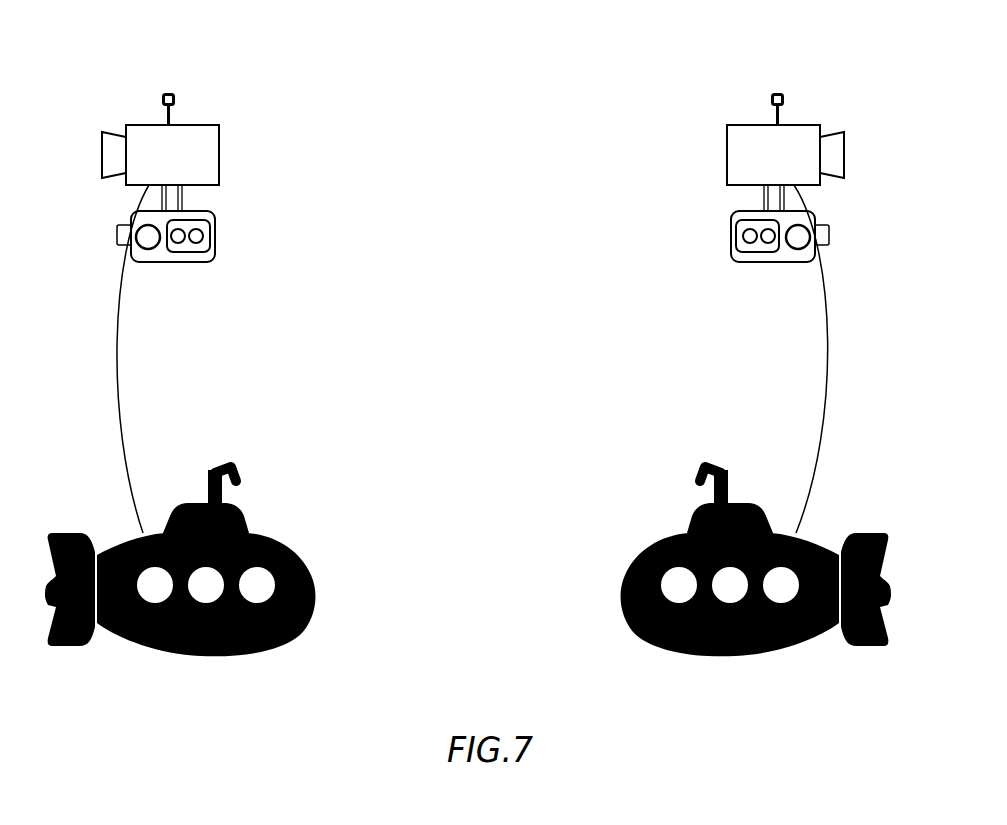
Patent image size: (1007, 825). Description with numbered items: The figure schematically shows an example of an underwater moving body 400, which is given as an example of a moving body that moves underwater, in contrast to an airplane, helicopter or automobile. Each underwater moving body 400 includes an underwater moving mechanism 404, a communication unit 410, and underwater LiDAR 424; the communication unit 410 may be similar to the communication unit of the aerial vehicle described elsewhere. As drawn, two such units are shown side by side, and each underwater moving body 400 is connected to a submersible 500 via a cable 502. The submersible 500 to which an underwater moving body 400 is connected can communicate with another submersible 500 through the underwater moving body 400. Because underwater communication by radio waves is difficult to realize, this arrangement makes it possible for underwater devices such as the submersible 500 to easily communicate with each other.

The underwater moving body 400 is at (117, 42).
The underwater LiDAR 424 is at (168, 92).
The underwater moving mechanism 404 is at (102, 156).
The communication unit 410 is at (220, 224).
The cable 502 is at (125, 420).
The submersible 500 is at (283, 548).